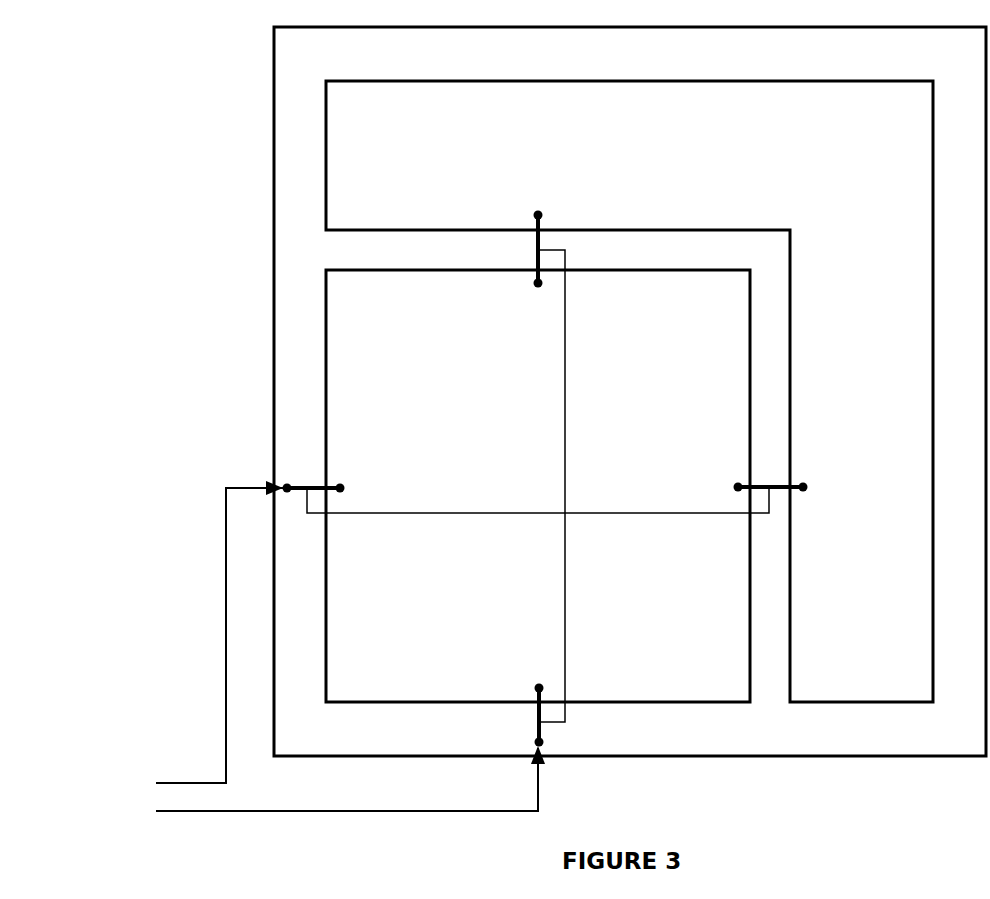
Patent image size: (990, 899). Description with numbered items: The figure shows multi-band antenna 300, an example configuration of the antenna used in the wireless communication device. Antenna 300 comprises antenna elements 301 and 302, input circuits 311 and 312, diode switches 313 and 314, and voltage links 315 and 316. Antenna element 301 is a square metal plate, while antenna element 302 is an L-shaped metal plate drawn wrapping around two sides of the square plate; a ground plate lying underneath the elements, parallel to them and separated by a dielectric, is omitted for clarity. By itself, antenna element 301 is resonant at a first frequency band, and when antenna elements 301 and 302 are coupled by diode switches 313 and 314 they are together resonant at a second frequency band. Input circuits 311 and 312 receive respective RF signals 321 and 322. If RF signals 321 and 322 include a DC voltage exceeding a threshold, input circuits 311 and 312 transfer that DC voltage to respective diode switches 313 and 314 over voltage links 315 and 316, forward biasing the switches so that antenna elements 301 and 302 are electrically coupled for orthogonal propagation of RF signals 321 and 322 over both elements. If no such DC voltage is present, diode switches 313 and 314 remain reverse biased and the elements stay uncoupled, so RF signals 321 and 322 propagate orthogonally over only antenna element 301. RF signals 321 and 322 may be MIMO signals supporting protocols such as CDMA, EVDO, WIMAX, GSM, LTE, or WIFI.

The multi-band antenna 300 is at (630, 391).
The antenna element 301 is at (538, 486).
The antenna element 302 is at (629, 391).
The input circuit 311 is at (537, 726).
The input circuit 312 is at (322, 487).
The diode switch 313 is at (536, 240).
The diode switch 314 is at (782, 486).
The voltage link 315 is at (564, 404).
The voltage link 316 is at (405, 513).
The RF signal 321 is at (541, 799).
The RF signal 322 is at (232, 487).